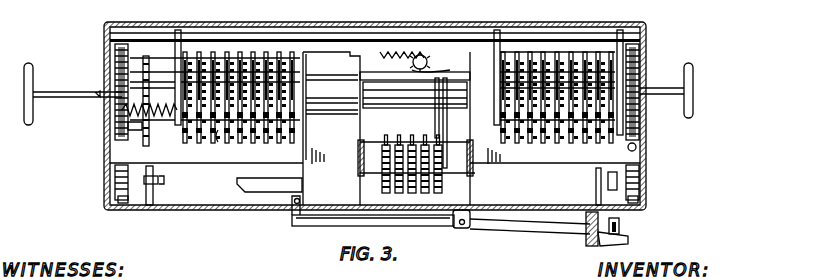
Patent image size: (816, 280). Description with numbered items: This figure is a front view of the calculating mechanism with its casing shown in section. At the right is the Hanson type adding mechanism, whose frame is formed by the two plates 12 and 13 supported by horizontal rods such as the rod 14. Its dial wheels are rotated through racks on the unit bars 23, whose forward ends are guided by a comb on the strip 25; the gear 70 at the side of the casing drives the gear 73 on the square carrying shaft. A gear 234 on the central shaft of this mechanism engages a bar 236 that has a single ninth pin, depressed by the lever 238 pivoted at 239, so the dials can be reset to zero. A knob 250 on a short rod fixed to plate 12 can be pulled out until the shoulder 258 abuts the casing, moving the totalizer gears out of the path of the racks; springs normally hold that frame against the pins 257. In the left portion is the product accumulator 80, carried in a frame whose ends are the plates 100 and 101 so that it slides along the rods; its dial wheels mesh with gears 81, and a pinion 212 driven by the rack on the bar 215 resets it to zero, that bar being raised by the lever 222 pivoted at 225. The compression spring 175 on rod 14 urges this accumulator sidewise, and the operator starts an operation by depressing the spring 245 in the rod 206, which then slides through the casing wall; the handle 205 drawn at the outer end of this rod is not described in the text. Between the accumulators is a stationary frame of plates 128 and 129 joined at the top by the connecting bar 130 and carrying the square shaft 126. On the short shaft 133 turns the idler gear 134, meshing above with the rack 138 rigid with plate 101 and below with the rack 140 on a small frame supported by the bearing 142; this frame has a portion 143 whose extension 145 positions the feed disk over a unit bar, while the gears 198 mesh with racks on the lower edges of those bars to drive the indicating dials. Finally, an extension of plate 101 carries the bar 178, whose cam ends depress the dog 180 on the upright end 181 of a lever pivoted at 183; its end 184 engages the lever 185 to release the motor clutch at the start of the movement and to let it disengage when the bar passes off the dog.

The left handle 205 is at (33, 66).
The spring 245 is at (108, 70).
The rod 206 is at (100, 90).
The rod 14 is at (110, 104).
The compression spring 175 is at (130, 124).
The pinion 212 is at (112, 140).
The frame end plate 100 is at (176, 42).
The product accumulator 80 is at (200, 52).
The bar 215 is at (150, 146).
The gear 81 is at (217, 143).
The strip 25 is at (269, 155).
The lever 222 is at (160, 180).
The pivot 225 is at (165, 180).
The bar 178 is at (260, 186).
The connecting bar 130 is at (360, 58).
The square shaft 126 is at (360, 100).
The frame end plate 101 is at (324, 142).
The rack 138 is at (388, 50).
The rack 140 is at (436, 62).
The idler gear 134 is at (426, 62).
The bearing 142 is at (435, 100).
The frame portion 143 is at (443, 125).
The gear 198 is at (384, 157).
The extension 145 is at (461, 148).
The plate 128 is at (360, 183).
The plate 129 is at (472, 182).
The short shaft 133 is at (498, 40).
The pin 257 is at (506, 40).
The plate 12 is at (567, 8).
The unit bar 23 is at (566, 144).
The gear 234 is at (614, 40).
The gear 73 is at (640, 60).
The plate 13 is at (648, 40).
The shoulder 258 is at (648, 78).
The knob 250 is at (693, 91).
The gear 70 is at (644, 130).
The bar 236 is at (636, 147).
The pivot 239 is at (596, 178).
The lever 238 is at (612, 180).
The dog 180 is at (296, 210).
The upright end 181 is at (298, 228).
The pivot 183 is at (462, 226).
The lever end 184 is at (620, 226).
The lever 185 is at (630, 240).